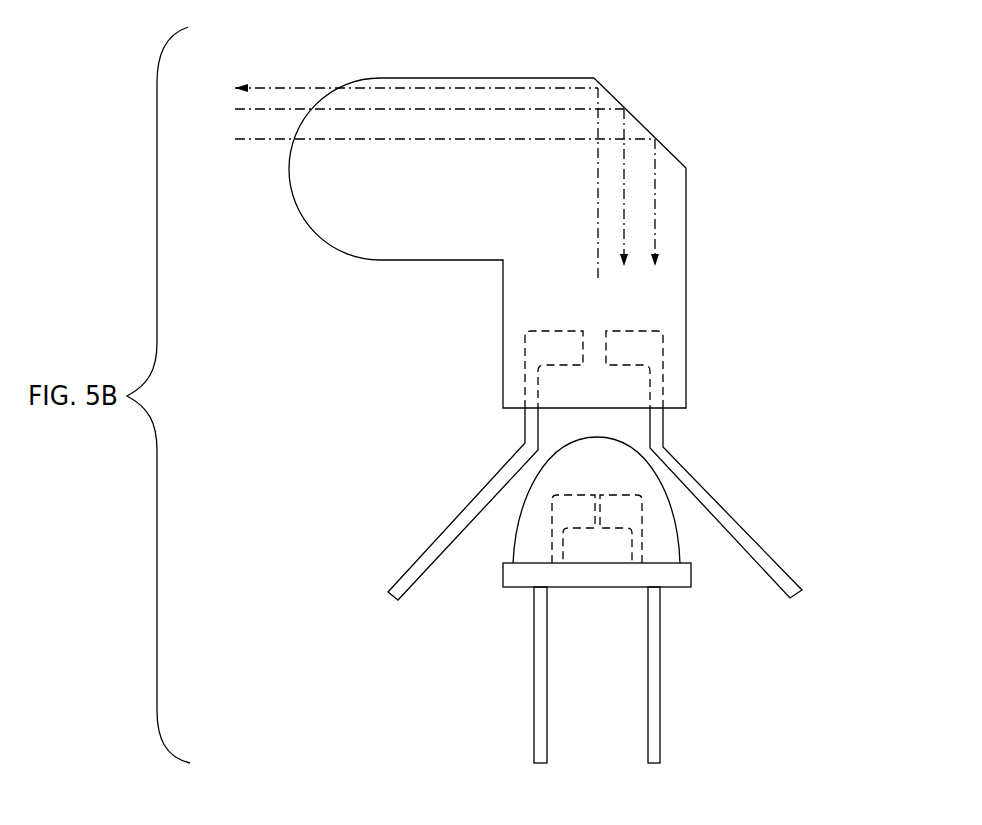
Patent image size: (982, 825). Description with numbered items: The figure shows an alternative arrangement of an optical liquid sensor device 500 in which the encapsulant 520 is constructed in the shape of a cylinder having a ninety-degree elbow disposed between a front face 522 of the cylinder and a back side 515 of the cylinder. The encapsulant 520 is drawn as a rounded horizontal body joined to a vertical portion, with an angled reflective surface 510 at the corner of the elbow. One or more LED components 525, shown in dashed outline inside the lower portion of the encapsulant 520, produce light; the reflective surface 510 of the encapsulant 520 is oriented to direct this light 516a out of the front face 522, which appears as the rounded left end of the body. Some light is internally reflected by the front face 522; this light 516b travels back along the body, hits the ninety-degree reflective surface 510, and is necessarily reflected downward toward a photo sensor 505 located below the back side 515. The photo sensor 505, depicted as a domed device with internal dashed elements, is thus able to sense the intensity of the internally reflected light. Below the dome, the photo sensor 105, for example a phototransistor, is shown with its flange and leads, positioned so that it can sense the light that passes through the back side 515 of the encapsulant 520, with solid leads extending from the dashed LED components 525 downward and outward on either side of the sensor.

The optical liquid sensor device 500 is at (370, 540).
The photo sensor 505 is at (643, 528).
The photo sensor 105 is at (503, 580).
The reflective surface 510 is at (627, 109).
The back side 515 is at (687, 410).
The encapsulant 520 is at (728, 356).
The front face 522 is at (305, 230).
The LED components 525 is at (663, 331).
The light 516a is at (296, 88).
The light 516b is at (518, 140).